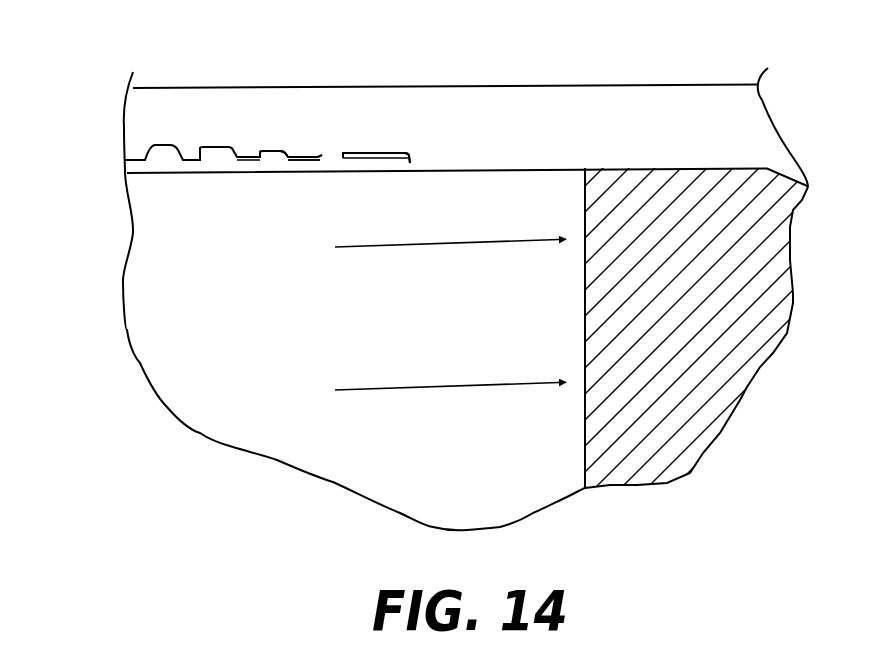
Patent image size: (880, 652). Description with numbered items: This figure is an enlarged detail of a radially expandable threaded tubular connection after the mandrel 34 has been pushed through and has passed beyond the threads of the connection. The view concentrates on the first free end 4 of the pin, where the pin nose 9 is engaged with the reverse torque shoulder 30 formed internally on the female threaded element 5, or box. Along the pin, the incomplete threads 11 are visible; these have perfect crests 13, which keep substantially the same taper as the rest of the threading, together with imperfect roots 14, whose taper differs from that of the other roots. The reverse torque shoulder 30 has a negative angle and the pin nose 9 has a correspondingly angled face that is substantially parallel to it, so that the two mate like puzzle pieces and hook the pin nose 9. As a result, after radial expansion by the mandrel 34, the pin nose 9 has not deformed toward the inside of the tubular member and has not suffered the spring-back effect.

The first free end 4 is at (167, 162).
The female threaded element 5 is at (560, 118).
The pin nose 9 is at (420, 162).
The incomplete threads 11 is at (273, 160).
The perfect crests 13 is at (268, 142).
The imperfect roots 14 is at (308, 148).
The reverse torque shoulder 30 is at (400, 161).
The mandrel 34 is at (765, 278).